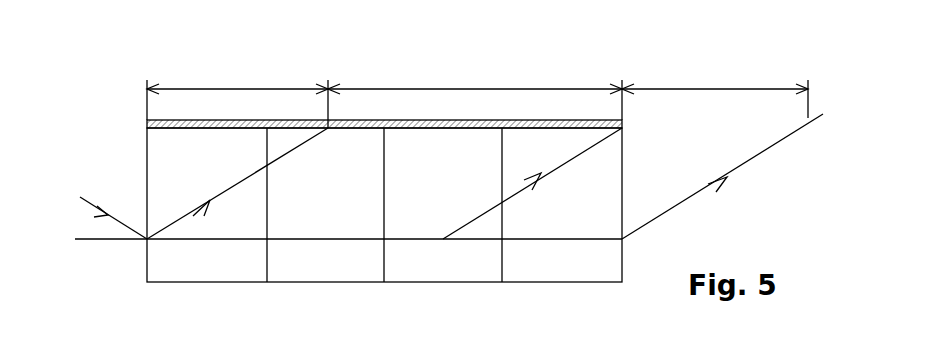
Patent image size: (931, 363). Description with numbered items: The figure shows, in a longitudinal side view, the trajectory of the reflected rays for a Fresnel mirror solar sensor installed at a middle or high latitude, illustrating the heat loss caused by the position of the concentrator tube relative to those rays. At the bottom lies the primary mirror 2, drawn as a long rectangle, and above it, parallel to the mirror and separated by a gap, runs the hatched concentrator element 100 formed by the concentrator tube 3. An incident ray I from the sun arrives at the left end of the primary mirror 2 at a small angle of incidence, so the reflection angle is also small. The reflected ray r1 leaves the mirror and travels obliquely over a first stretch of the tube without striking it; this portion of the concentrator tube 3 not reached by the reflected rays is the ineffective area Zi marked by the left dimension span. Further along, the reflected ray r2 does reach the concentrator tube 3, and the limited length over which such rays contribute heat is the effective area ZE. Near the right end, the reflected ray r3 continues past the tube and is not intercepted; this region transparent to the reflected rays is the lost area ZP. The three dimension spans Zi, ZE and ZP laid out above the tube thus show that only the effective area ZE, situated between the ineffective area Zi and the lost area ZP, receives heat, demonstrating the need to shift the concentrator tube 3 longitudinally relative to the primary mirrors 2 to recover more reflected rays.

The primary mirrors 2 is at (232, 239).
The concentrator element 100 is at (384, 84).
The concentrator tube 3 is at (362, 120).
The ineffective area Zi is at (243, 89).
The effective area ZE is at (462, 89).
The lost area ZP is at (700, 89).
The incident ray I is at (103, 203).
The reflected ray r1 is at (173, 222).
The reflected ray r2 is at (550, 170).
The reflected ray r3 is at (748, 162).